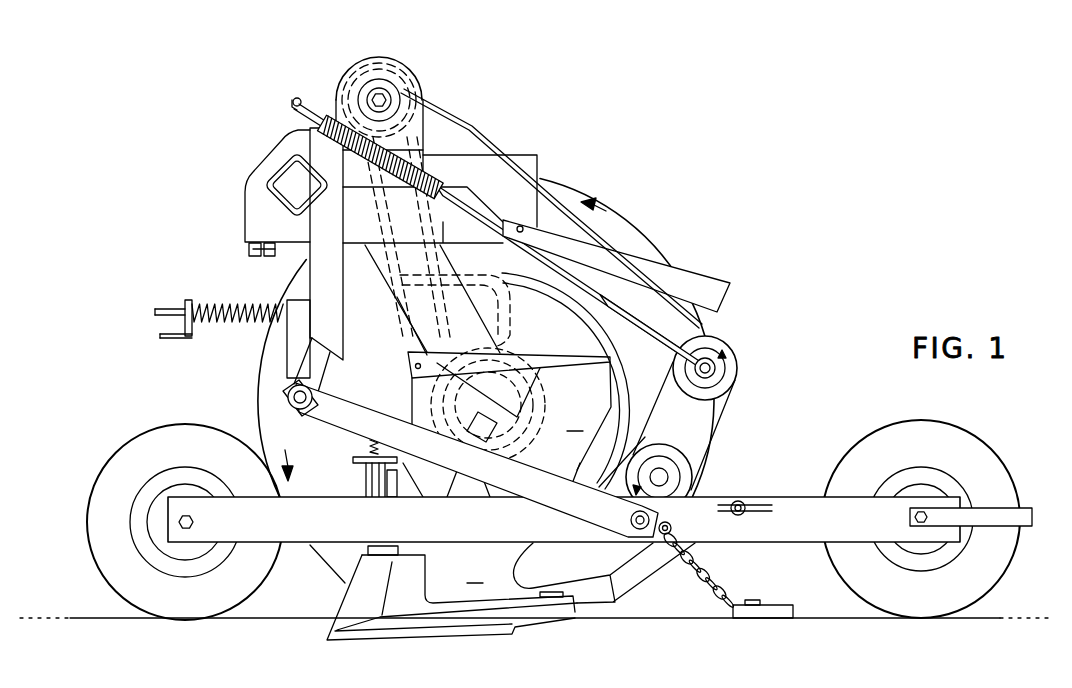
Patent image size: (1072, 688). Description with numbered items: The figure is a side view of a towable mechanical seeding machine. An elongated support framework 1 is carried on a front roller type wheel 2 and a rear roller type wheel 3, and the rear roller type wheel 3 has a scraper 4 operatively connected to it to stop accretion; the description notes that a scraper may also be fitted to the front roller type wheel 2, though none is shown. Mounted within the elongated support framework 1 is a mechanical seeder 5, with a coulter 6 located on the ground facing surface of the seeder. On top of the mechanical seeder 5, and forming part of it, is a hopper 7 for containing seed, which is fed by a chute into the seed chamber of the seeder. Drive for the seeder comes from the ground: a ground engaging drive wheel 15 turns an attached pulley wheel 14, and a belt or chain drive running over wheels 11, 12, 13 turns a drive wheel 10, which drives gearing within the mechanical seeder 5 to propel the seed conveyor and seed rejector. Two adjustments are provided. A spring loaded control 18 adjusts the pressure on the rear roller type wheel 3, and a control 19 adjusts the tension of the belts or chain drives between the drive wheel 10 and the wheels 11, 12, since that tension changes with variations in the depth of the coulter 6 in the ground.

The elongated support framework 1 is at (786, 512).
The front roller type wheel 2 is at (108, 518).
The rear roller type wheel 3 is at (945, 597).
The scraper 4 is at (1008, 515).
The mechanical seeder 5 is at (502, 579).
The coulter 6 is at (370, 628).
The hopper 7 is at (509, 409).
The drive wheel 10 is at (690, 474).
The wheel 11 is at (733, 368).
The wheel 12 is at (403, 95).
The wheel 13 is at (399, 67).
The pulley wheel 14 is at (442, 400).
The ground engaging drive wheel 15 is at (268, 412).
The spring loaded control 18 is at (185, 340).
The control 19 is at (291, 101).